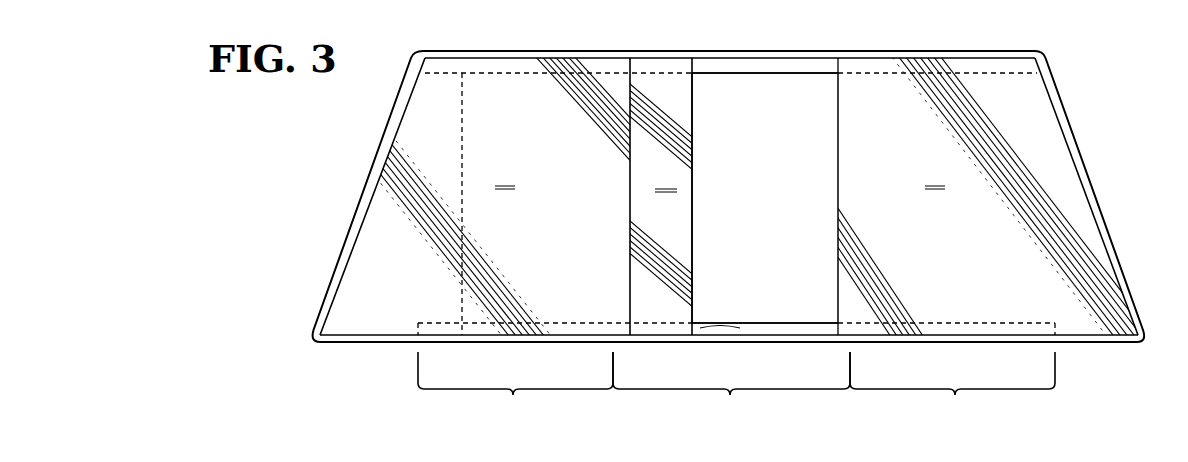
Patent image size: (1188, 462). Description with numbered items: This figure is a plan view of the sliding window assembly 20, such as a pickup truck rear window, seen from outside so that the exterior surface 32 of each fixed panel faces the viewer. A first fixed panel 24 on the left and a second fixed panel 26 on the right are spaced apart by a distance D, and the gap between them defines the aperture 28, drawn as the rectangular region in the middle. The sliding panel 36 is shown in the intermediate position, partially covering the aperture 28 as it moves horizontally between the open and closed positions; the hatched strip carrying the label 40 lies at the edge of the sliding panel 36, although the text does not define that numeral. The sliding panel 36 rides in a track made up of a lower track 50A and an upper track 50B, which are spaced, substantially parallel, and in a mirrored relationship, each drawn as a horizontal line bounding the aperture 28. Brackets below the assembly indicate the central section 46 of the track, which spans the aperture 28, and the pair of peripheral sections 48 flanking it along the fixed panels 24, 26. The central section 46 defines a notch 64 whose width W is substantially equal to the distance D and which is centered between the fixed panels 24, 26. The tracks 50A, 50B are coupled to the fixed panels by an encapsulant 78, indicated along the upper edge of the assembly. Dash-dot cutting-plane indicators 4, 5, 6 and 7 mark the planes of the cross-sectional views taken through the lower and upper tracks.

The sliding window assembly 20 is at (1100, 57).
The first fixed panel 24 is at (365, 300).
The second fixed panel 26 is at (1090, 270).
The aperture 28 is at (838, 108).
The exterior surface 32 is at (711, 200).
The sliding panel 36 is at (662, 88).
The intermediate strip 40 is at (660, 196).
The central section 46 is at (731, 386).
The peripheral sections 48 is at (736, 386).
The lower track 50A is at (829, 326).
The upper track 50B is at (805, 66).
The notch 64 is at (722, 330).
The encapsulant 78 is at (470, 55).
The section line 4- 4 is at (575, 359).
The section line 5- 5 is at (778, 359).
The section line 6- 6 is at (523, 107).
The section line 7- 7 is at (777, 107).